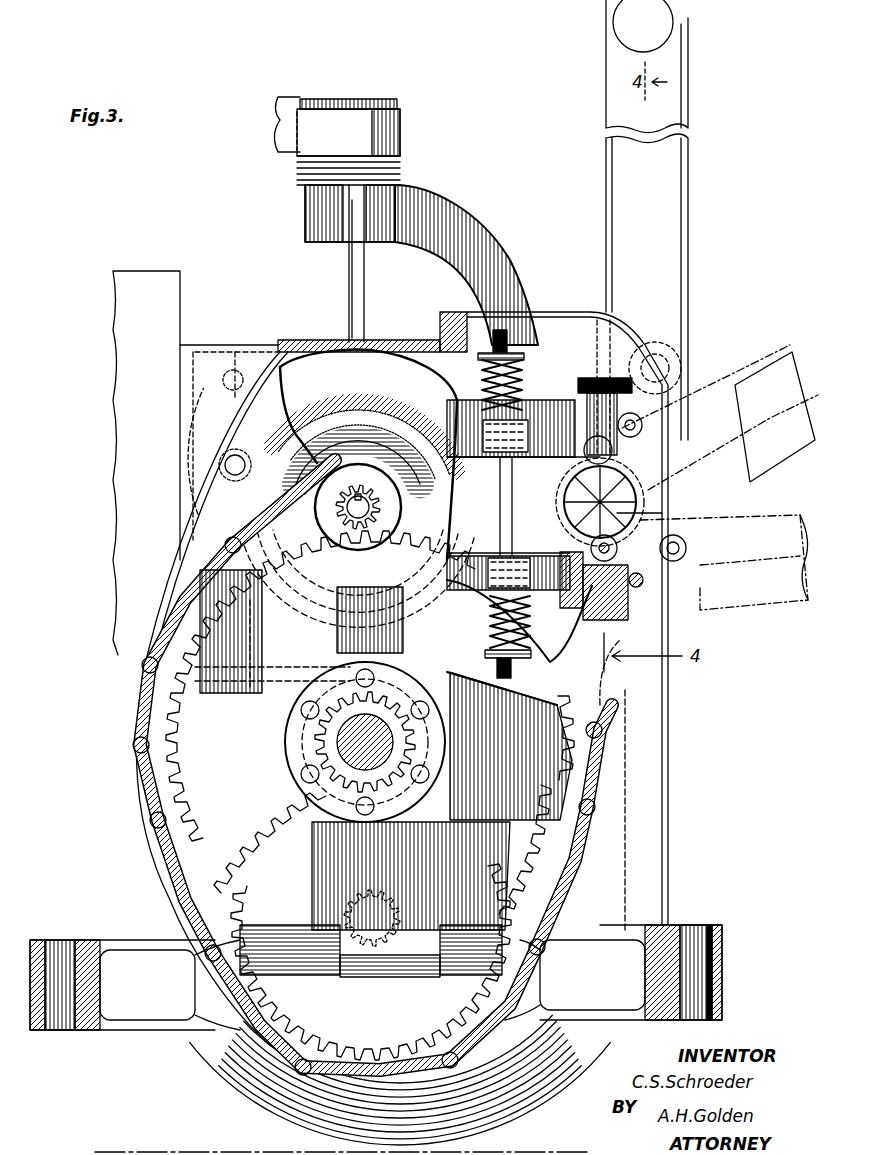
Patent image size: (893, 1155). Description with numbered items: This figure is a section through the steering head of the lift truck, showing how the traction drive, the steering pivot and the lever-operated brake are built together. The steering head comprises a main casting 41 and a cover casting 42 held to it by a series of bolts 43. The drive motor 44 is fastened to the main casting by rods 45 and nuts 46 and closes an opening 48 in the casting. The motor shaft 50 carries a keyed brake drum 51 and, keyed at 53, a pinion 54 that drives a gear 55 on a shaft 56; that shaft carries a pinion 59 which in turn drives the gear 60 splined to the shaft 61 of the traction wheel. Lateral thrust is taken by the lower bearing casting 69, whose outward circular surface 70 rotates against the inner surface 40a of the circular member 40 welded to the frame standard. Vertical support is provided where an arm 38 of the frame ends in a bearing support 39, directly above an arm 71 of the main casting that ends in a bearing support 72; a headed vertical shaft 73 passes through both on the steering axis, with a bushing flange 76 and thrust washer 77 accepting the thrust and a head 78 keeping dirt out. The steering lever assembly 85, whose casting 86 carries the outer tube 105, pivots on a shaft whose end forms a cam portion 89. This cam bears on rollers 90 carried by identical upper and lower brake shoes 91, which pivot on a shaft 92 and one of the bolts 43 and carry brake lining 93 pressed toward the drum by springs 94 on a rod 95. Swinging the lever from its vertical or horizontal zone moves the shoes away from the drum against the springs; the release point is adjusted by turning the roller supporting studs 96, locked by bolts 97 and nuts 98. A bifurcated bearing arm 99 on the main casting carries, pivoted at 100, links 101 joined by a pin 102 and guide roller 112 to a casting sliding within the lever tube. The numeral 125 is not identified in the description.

The arm 38 is at (300, 112).
The bearing support 39 is at (402, 130).
The circular member 40 is at (722, 971).
The inner surface 40a is at (72, 1032).
The main casting 41 is at (292, 360).
The cover casting 42 is at (170, 620).
The bolts 43 is at (225, 546).
The drive motor 44 is at (322, 372).
The rods 45 is at (235, 352).
The nuts 46 is at (228, 380).
The opening 48 is at (405, 348).
The motor shaft 50 is at (358, 515).
The brake drum 51 is at (523, 504).
The keyed connection 53 is at (345, 497).
The pinion 54 is at (372, 542).
The gear 55 is at (172, 707).
The shaft 56 is at (352, 742).
The pinion 59 is at (300, 780).
The gear 60 is at (392, 999).
The shaft 61 is at (395, 942).
The lower bearing casting 69 is at (105, 1005).
The outward circular surface 70 is at (76, 1032).
The arm 71 is at (366, 277).
The bearing support 72 is at (306, 206).
The headed vertical shaft 73 is at (325, 243).
The flange 76 is at (400, 160).
The thrust washer 77 is at (400, 175).
The head 78 is at (396, 104).
The steering lever assembly 85 is at (706, 183).
The casting 86 is at (598, 312).
The cam portion 89 is at (592, 518).
The rollers 90 is at (600, 470).
The brake shoes 91 is at (445, 410).
The shaft 92 is at (237, 458).
The brake lining 93 is at (365, 400).
The springs 94 is at (525, 368).
The rod 95 is at (508, 340).
The roller supporting studs 96 is at (580, 384).
The bolts 97 is at (645, 420).
The nuts 98 is at (690, 392).
The bifurcated bearing arm 99 is at (665, 602).
The pivot 100 is at (687, 546).
The links 101 is at (640, 490).
The pin 102 is at (662, 348).
The outer tube 105 is at (672, 248).
The guide roller 112 is at (668, 322).
The pipe end 125 is at (643, 26).